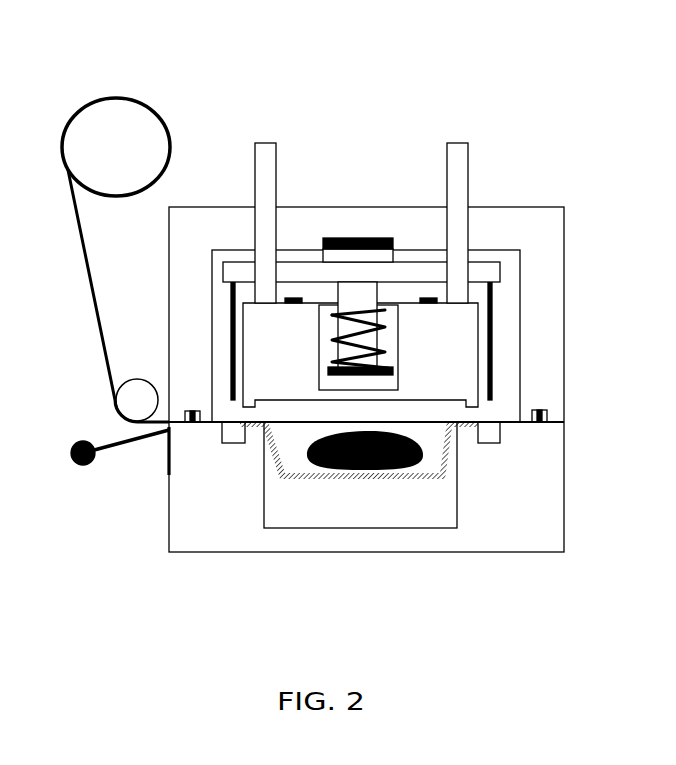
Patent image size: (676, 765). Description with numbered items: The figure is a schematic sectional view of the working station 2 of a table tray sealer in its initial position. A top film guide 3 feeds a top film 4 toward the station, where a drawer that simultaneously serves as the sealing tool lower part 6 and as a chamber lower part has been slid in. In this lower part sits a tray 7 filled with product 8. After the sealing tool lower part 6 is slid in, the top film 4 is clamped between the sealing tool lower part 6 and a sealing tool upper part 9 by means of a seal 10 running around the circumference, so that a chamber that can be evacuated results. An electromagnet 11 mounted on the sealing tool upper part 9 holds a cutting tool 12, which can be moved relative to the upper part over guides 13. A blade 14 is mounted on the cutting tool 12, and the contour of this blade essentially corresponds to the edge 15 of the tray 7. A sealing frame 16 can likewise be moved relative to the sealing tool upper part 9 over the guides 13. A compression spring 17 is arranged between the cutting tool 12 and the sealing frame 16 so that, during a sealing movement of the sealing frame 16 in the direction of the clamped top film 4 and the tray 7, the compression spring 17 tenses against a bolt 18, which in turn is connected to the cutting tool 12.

The working station 2 is at (615, 185).
The top film guide 3 is at (117, 110).
The top film 4 is at (82, 262).
The sealing tool lower part 6 is at (552, 512).
The tray 7 is at (423, 477).
The product 8 is at (343, 475).
The sealing tool upper part 9 is at (553, 307).
The seal 10 is at (550, 412).
The electromagnet 11 is at (353, 236).
The cutting tool 12 is at (497, 273).
The guides 13 is at (257, 157).
The blade 14 is at (492, 338).
The edge 15 is at (227, 443).
The sealing frame 16 is at (467, 370).
The compression spring 17 is at (330, 313).
The bolt 18 is at (363, 297).